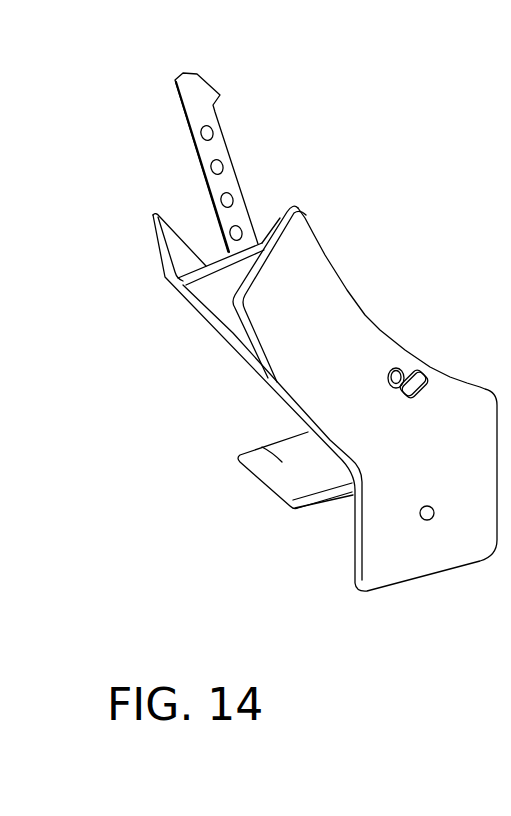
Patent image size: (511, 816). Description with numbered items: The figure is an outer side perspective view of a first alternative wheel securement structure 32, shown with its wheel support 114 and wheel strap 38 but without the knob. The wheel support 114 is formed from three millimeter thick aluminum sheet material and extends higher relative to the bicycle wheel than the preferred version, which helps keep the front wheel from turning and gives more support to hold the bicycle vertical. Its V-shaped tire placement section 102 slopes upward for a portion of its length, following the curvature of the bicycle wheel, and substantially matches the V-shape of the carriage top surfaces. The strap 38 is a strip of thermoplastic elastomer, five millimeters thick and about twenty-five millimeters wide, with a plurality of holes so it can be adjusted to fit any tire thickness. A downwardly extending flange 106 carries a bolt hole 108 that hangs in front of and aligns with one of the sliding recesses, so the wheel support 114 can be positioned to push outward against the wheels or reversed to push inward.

The wheel securement structure 32 is at (271, 344).
The wheel strap 38 is at (228, 178).
The V-shaped tire placement section 102 is at (155, 240).
The downwardly extending flange 106 is at (384, 552).
The bolt hole 108 is at (427, 521).
The wheel support 114 is at (272, 345).